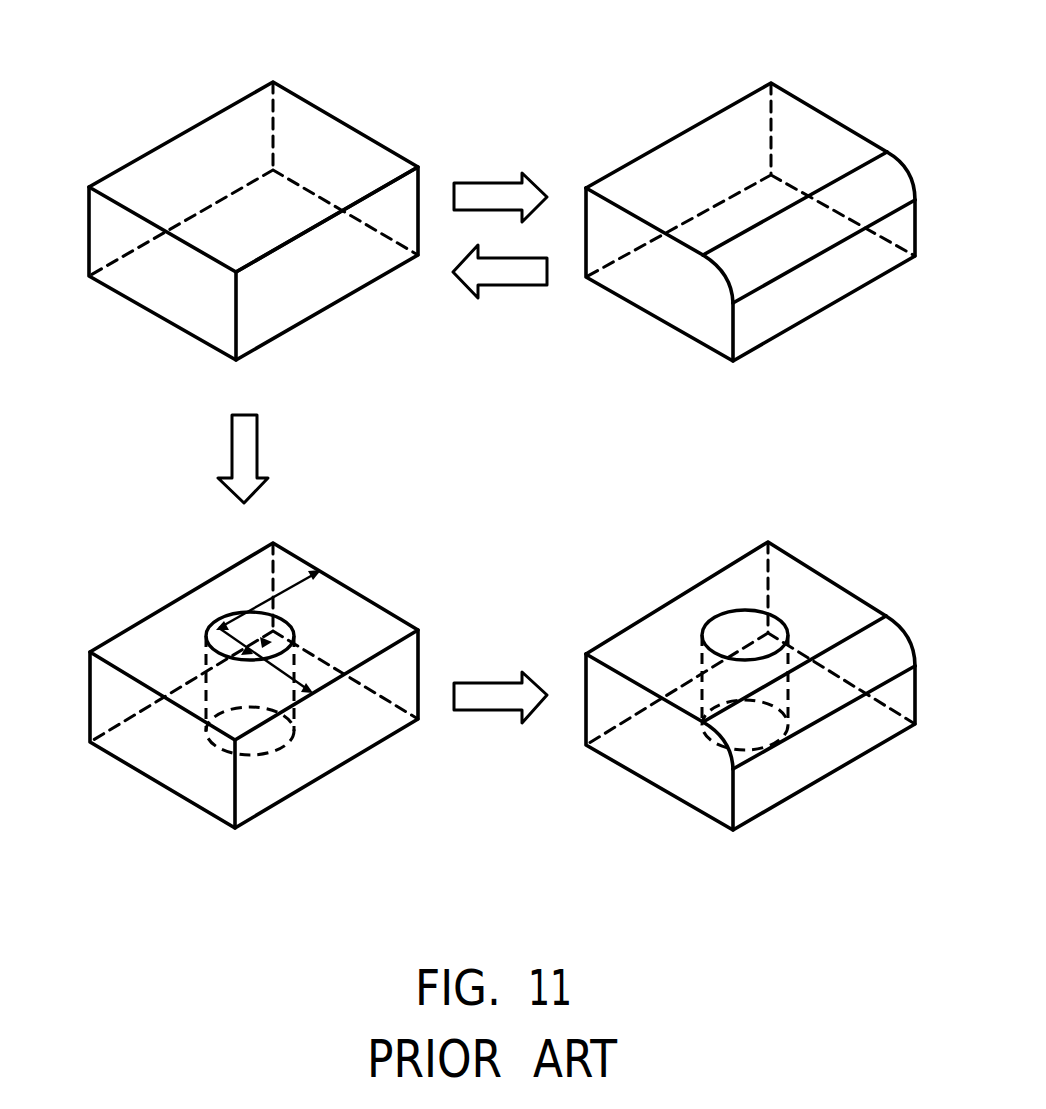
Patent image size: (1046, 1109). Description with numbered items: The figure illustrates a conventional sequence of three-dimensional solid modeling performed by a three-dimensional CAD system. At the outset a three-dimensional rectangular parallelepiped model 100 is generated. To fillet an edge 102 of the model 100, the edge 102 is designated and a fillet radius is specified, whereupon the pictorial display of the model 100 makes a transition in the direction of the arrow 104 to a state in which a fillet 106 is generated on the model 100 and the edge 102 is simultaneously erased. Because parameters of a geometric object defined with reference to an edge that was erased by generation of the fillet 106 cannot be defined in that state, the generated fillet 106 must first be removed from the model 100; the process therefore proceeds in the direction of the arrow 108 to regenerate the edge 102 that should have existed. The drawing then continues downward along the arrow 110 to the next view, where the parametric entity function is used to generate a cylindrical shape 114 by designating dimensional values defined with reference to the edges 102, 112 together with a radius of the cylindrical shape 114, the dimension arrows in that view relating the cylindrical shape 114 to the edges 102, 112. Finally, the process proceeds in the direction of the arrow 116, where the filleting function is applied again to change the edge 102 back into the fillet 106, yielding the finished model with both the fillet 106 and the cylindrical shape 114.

The three-dimensional rectangular parallelepiped model 100 is at (345, 104).
The edge 102 is at (313, 228).
The arrow 104 is at (492, 182).
The fillet 106 is at (897, 179).
The arrow 108 is at (498, 288).
The hole drilling step 110 is at (258, 455).
The edge 112 is at (355, 590).
The cylindrical shape 114 is at (208, 630).
The arrow 116 is at (480, 682).